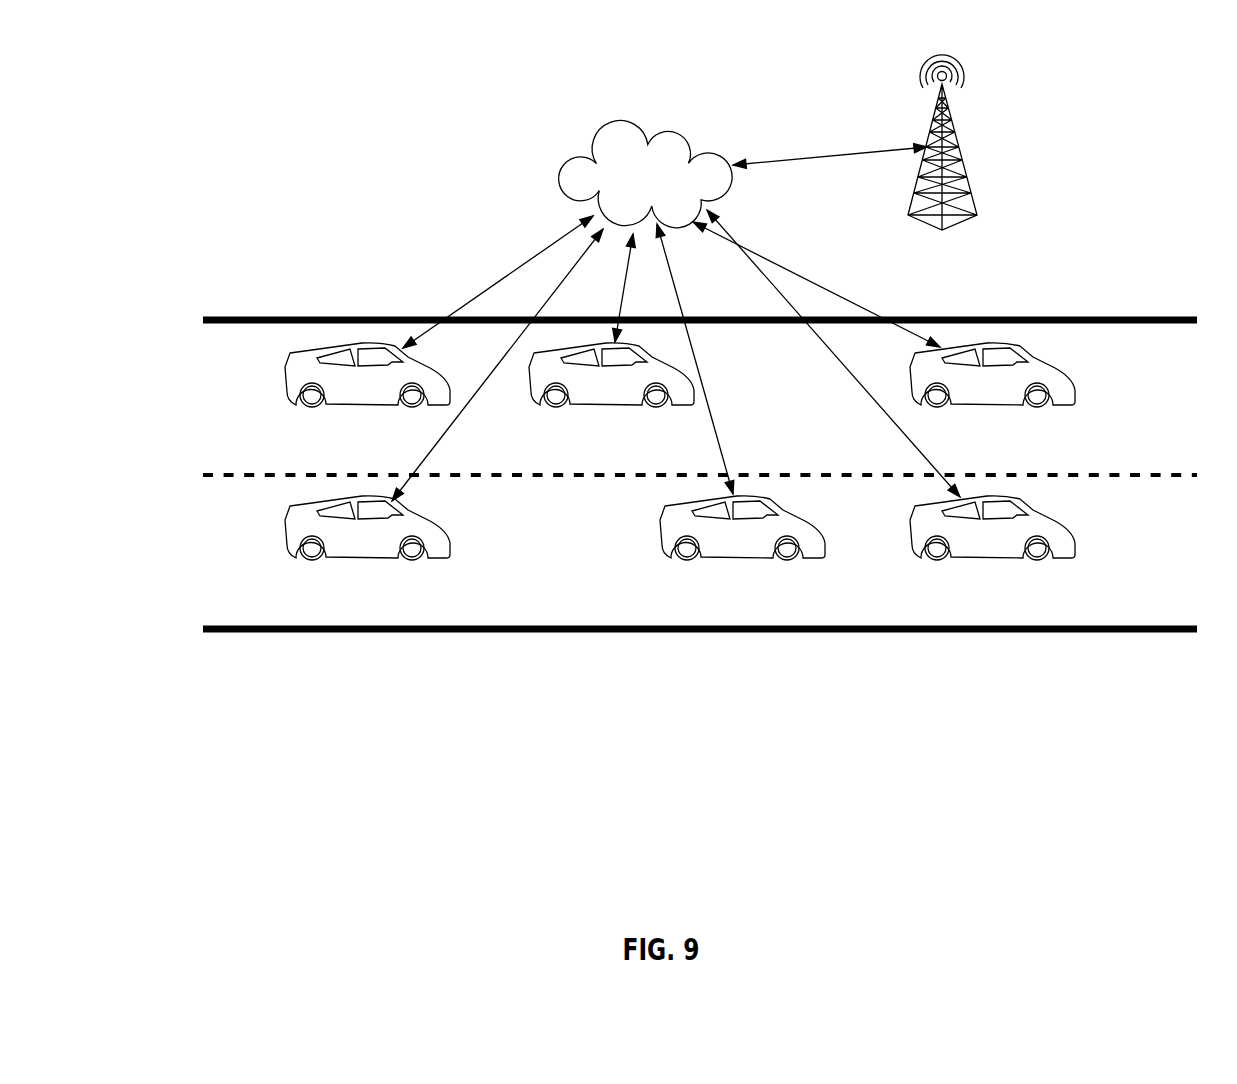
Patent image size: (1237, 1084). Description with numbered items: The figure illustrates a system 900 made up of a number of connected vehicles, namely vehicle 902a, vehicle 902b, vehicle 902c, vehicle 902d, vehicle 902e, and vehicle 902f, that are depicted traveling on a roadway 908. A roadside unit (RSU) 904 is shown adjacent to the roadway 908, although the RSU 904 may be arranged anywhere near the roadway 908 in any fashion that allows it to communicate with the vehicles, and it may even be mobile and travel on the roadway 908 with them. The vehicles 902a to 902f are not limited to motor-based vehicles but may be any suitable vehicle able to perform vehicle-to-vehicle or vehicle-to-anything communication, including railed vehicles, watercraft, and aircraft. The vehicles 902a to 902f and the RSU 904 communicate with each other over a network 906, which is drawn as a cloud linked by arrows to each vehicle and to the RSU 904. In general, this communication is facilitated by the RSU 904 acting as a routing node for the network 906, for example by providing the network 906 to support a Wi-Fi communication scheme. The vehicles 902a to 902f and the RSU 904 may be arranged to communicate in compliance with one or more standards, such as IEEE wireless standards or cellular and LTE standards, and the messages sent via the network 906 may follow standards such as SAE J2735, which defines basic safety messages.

The system 900 is at (1119, 100).
The vehicle 902a is at (971, 453).
The vehicle 902b is at (1016, 609).
The vehicle 902c is at (721, 609).
The vehicle 902d is at (587, 453).
The vehicle 902e is at (345, 609).
The vehicle 902f is at (345, 453).
The roadside unit (RSU) 904 is at (926, 272).
The network 906 is at (625, 190).
The roadway 908 is at (575, 608).